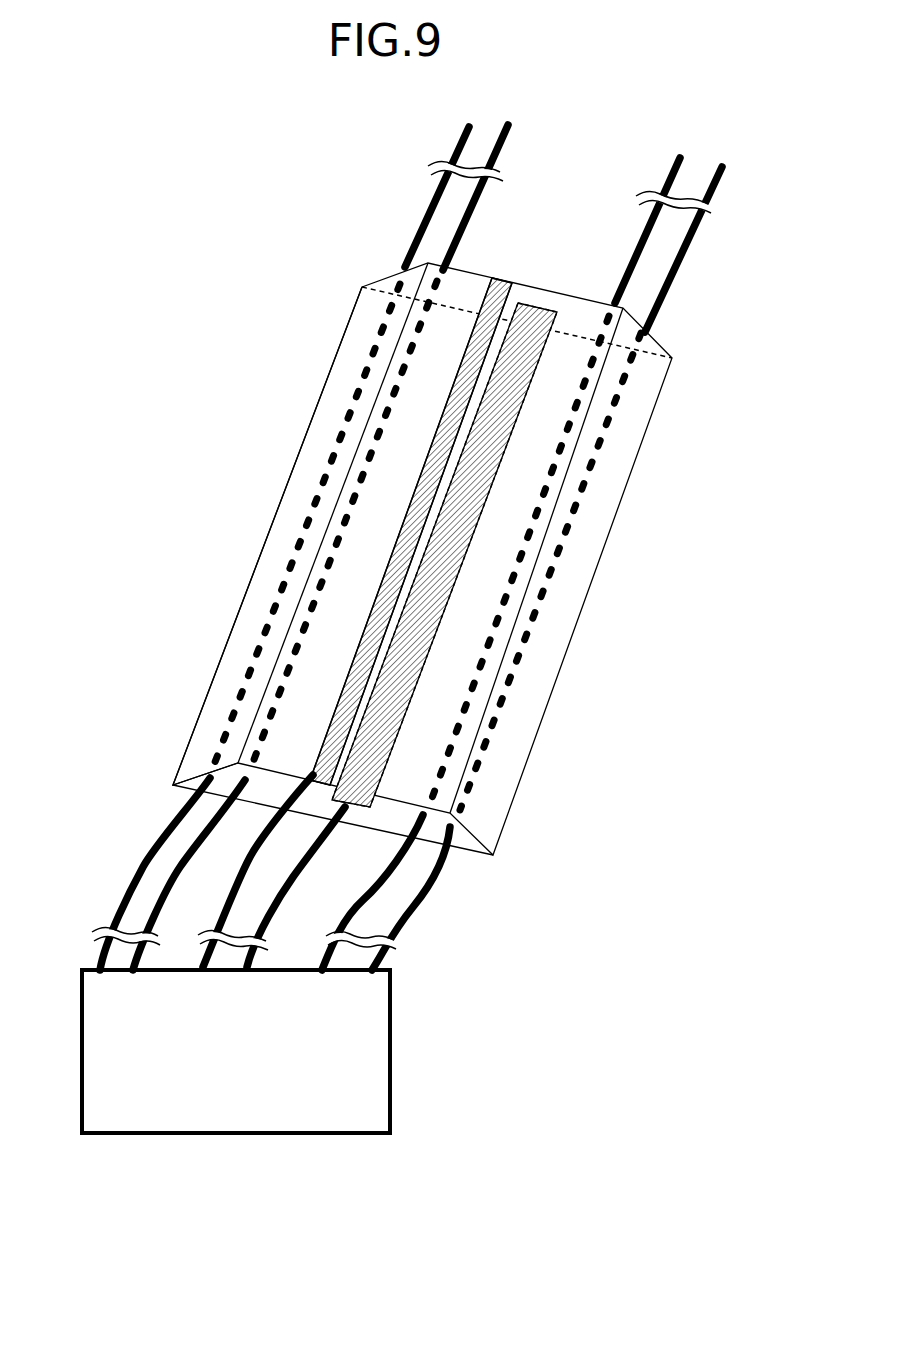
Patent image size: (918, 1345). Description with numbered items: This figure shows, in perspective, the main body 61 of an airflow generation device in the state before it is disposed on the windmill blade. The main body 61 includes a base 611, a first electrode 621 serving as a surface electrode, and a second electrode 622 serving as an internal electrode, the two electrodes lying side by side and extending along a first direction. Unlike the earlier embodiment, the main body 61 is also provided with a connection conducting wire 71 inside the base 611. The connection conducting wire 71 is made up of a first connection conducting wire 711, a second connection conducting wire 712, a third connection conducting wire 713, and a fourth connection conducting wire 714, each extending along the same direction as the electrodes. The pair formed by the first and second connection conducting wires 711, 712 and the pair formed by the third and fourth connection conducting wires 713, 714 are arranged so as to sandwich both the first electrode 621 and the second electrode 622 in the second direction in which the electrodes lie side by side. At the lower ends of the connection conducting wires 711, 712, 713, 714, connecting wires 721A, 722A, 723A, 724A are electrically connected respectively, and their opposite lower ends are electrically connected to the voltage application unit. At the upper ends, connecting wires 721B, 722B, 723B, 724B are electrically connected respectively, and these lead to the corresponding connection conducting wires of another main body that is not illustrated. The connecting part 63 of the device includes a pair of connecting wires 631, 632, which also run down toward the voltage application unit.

The main body 61 is at (255, 463).
The base 611 is at (356, 327).
The first electrode 621 is at (465, 372).
The second electrode 622 is at (490, 405).
The connecting part 63 is at (175, 871).
The connecting wire 631 is at (221, 908).
The connecting wire 632 is at (282, 868).
The connection conducting wire 71 is at (415, 545).
The first connection conducting wire 711 is at (291, 562).
The second connection conducting wire 712 is at (310, 612).
The third connection conducting wire 713 is at (515, 585).
The fourth connection conducting wire 714 is at (540, 617).
The connecting wire 721A is at (182, 812).
The connecting wire 721B is at (434, 199).
The connecting wire 722A is at (200, 835).
The connecting wire 722B is at (450, 240).
The connecting wire 723A is at (380, 882).
The connecting wire 723B is at (642, 247).
The connecting wire 724A is at (412, 908).
The connecting wire 724B is at (661, 302).